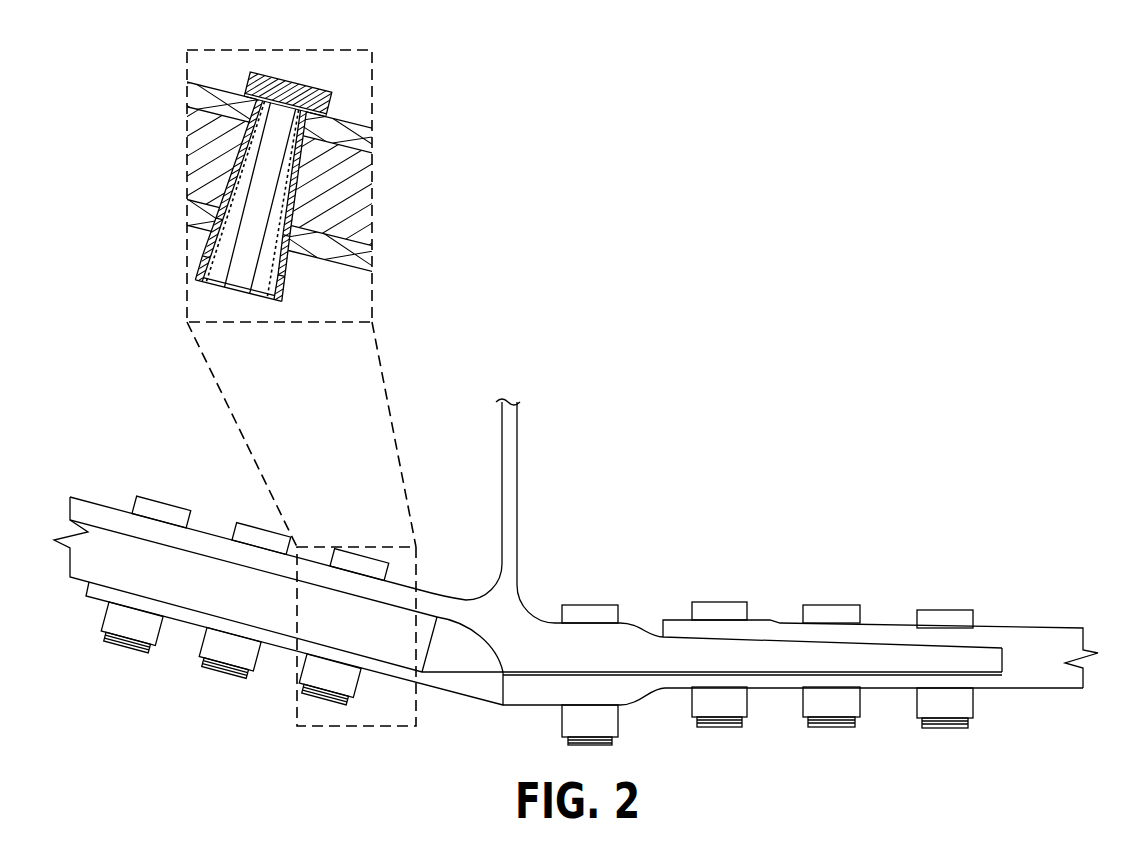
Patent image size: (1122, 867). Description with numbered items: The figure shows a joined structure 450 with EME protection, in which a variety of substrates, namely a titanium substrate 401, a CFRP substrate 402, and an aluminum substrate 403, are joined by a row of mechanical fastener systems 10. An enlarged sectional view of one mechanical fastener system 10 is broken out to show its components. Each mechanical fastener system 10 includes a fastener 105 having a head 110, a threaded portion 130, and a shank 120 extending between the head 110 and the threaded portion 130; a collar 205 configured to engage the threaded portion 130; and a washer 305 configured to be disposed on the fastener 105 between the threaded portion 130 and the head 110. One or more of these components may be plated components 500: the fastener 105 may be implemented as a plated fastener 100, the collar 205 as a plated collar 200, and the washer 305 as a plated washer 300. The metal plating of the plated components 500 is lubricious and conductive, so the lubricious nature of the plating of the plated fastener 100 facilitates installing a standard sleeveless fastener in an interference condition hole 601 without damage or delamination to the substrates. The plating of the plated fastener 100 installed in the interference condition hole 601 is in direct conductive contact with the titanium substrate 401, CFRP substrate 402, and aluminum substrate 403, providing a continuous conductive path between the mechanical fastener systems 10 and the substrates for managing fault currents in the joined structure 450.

The mechanical fastener system 10 is at (153, 493).
The head 110 is at (307, 95).
The shank 120 is at (282, 142).
The threaded portion 130 is at (277, 281).
The interference condition hole 601 is at (248, 100).
The fastener 105 is at (296, 186).
The plated fastener 100 is at (348, 169).
The collar 205 is at (280, 261).
The plated collar 200 is at (341, 263).
The washer 305 is at (277, 295).
The plated washer 300 is at (338, 311).
The plated components 500 is at (355, 212).
The titanium substrate 401 is at (510, 488).
The CFRP substrate 402 is at (423, 648).
The aluminum substrate 403 is at (1025, 690).
The joined structure 450 is at (562, 393).